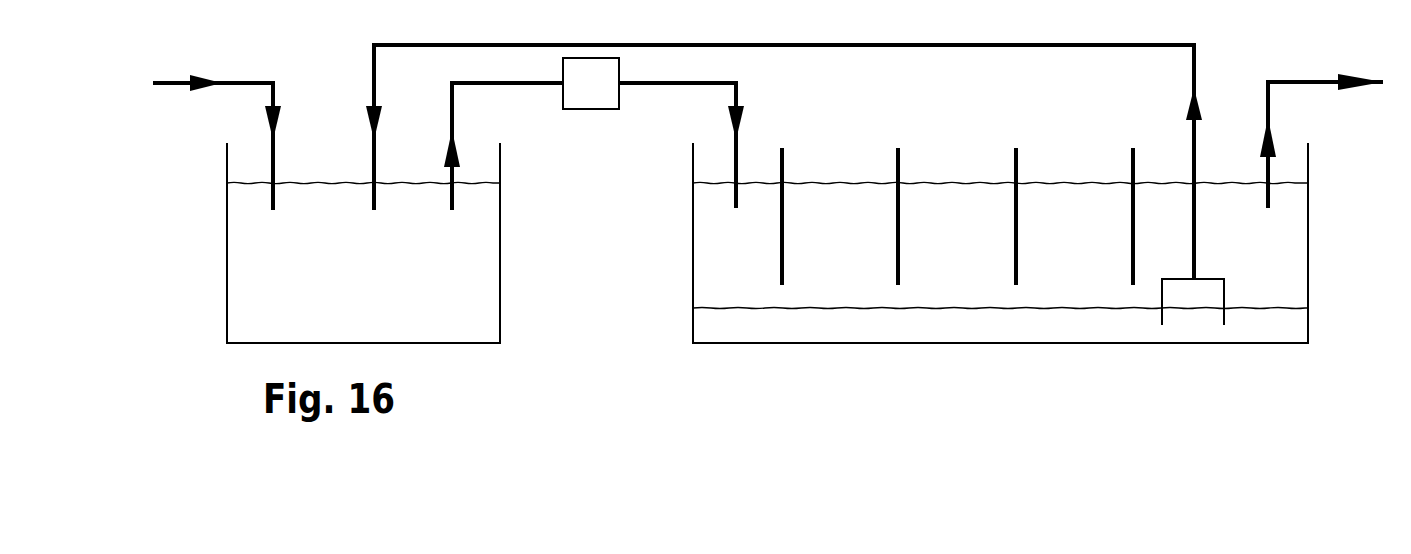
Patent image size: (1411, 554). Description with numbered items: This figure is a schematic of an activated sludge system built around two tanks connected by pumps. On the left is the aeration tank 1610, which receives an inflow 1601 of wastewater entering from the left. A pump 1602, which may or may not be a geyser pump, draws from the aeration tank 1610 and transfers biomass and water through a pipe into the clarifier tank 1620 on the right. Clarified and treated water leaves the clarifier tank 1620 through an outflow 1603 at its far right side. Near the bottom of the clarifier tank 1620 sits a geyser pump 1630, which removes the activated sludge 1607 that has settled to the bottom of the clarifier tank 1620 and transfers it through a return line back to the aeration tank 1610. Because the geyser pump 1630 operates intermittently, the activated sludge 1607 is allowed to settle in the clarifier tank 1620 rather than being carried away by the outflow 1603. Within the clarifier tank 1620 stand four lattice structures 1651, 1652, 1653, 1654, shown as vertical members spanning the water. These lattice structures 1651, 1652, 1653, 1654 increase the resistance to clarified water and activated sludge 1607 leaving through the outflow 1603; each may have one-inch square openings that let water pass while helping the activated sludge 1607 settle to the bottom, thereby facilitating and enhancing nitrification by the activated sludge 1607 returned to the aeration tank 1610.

The inflow 1601 is at (253, 83).
The pump 1602 is at (593, 109).
The outflow 1603 is at (1302, 82).
The activated sludge 1607 is at (722, 327).
The aeration tank 1610 is at (426, 343).
The clarifier tank 1620 is at (850, 343).
The geyser pump 1630 is at (1160, 317).
The lattice structure 1651 is at (785, 160).
The lattice structure 1652 is at (901, 163).
The lattice structure 1653 is at (1019, 163).
The lattice structure 1654 is at (1136, 160).